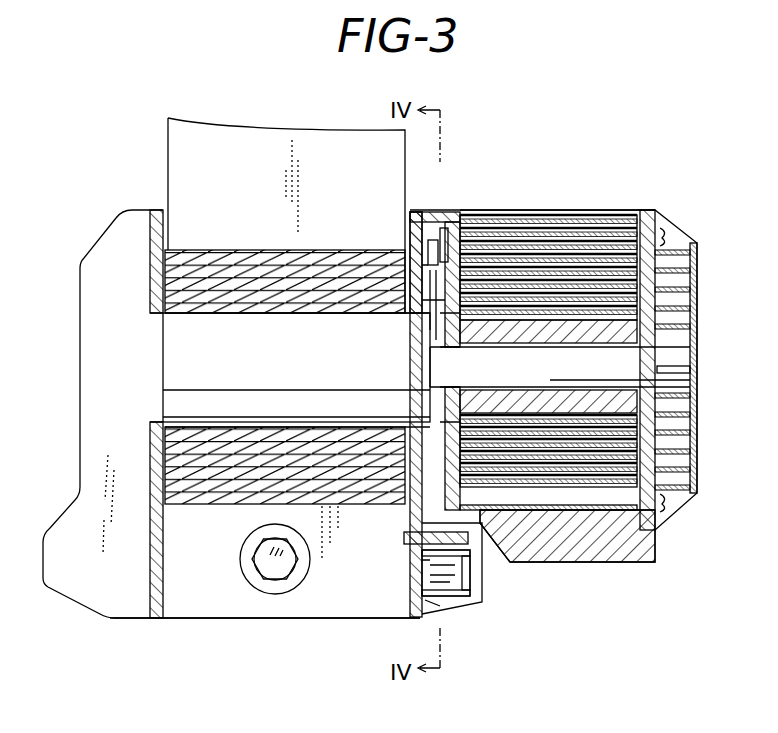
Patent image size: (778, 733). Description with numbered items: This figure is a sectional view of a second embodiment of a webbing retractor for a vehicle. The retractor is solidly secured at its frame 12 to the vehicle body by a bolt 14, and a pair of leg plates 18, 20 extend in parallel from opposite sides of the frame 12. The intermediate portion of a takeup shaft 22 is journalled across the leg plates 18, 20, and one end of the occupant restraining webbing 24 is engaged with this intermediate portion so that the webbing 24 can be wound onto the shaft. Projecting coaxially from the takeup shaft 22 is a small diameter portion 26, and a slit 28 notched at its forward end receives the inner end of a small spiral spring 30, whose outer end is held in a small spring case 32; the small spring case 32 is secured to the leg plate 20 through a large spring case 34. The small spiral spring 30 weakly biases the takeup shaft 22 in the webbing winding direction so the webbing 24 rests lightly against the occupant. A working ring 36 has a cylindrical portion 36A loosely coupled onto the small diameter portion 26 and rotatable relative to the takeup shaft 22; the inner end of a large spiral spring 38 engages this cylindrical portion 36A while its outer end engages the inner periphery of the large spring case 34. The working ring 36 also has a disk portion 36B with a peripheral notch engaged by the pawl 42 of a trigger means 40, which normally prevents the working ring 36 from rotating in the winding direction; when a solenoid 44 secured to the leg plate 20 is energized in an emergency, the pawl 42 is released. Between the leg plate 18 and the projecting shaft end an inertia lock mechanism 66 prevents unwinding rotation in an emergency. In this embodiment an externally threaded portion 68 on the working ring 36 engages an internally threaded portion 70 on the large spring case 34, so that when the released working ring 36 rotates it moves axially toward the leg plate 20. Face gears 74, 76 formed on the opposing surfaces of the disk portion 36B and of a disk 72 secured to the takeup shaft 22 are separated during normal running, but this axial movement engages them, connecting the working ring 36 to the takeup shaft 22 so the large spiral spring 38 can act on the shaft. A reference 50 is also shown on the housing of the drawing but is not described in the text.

The frame 12 is at (192, 616).
The bolt 14 is at (285, 570).
The leg plate 18 is at (164, 556).
The leg plate 20 is at (410, 585).
The takeup shaft 22 is at (290, 320).
The occupant restraining webbing 24 is at (228, 250).
The small diameter portion 26 is at (680, 358).
The slit 28 is at (668, 376).
The small spiral spring 30 is at (672, 266).
The small spring case 32 is at (700, 438).
The large spring case 34 is at (612, 210).
The working ring 36 is at (647, 332).
The cylindrical portion 36A is at (541, 420).
The disk portion 36B is at (480, 243).
The large spiral spring 38 is at (575, 252).
The trigger means 40 is at (493, 604).
The pawl 42 is at (408, 540).
The solenoid 44 is at (470, 585).
The brake housing 50 is at (403, 216).
The inertia lock mechanism 66 is at (101, 604).
The externally threaded portion 68 is at (452, 222).
The internally threaded portion 70 is at (437, 213).
The disk 72 is at (430, 318).
The face gear 74 is at (470, 338).
The face gear 76 is at (415, 237).